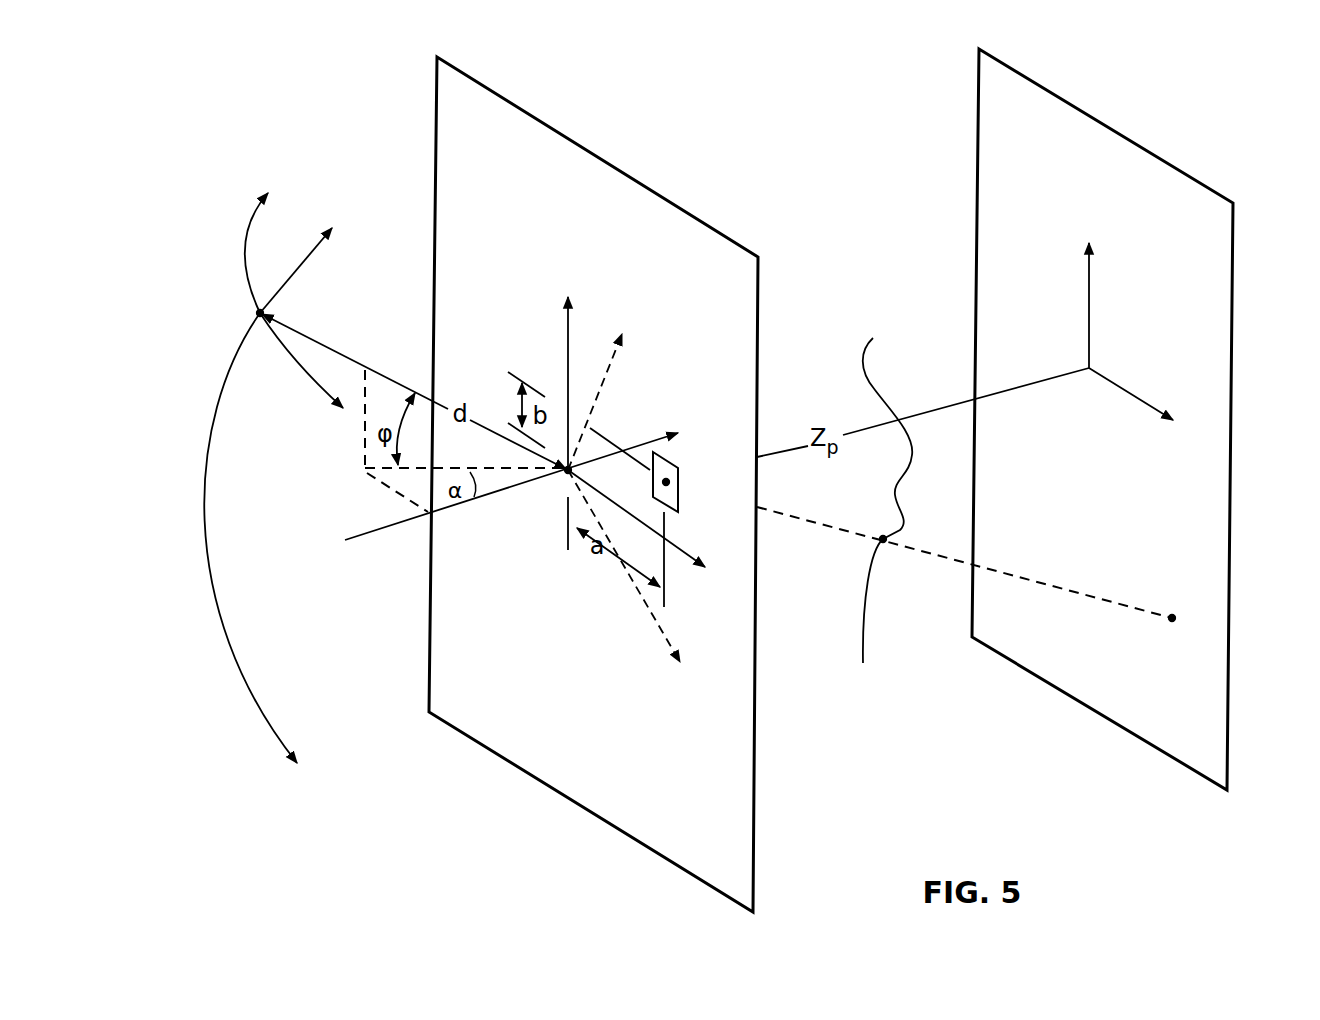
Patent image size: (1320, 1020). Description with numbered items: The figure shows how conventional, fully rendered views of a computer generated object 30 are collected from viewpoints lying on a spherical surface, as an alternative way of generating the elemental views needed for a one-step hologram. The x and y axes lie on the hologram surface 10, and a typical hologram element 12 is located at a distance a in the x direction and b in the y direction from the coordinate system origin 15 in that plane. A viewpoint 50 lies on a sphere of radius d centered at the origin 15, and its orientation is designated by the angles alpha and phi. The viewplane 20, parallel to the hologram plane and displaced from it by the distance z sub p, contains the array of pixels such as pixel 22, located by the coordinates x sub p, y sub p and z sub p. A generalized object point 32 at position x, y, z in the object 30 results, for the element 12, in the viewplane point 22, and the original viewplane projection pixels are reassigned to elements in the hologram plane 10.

The hologram surface 10 is at (552, 137).
The hologram element 12 is at (680, 505).
The coordinate system origin 15 is at (567, 473).
The viewplane 20 is at (1093, 130).
The pixel 22 is at (1172, 618).
The object 30 is at (866, 635).
The object point 32 is at (885, 542).
The viewpoint 50 is at (256, 312).